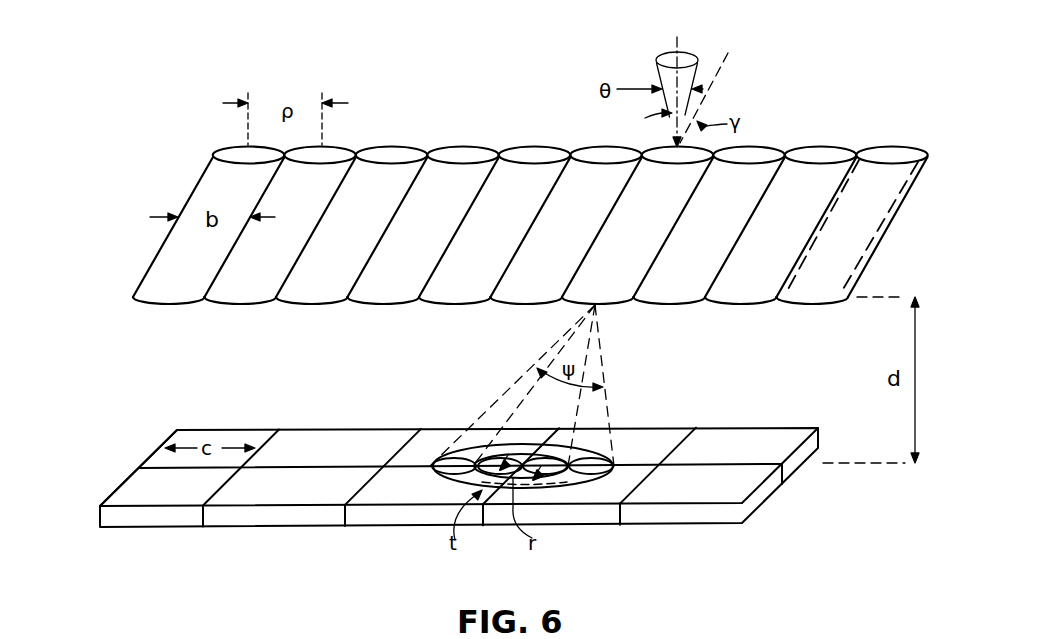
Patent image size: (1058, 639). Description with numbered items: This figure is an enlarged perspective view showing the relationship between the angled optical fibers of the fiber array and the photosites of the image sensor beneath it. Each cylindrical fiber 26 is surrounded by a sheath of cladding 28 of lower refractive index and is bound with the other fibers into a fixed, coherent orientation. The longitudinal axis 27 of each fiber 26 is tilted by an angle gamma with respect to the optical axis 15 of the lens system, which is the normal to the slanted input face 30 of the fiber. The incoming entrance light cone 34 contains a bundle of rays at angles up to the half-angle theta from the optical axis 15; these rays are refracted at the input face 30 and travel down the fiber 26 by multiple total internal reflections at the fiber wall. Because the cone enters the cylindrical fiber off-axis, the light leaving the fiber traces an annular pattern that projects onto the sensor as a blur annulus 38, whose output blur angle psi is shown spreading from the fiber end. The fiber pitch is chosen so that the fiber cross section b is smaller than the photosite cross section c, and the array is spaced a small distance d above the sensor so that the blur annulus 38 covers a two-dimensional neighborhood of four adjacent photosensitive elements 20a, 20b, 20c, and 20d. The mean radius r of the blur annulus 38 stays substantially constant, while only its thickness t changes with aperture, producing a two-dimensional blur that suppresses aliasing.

The optical axis 15 is at (673, 38).
The entrance light cone 34 is at (688, 50).
The longitudinal axis of fiber 27 is at (716, 79).
The input face 30 is at (647, 145).
The optical fiber 26 is at (552, 205).
The cladding 28 is at (872, 232).
The photosensitive element 20a is at (432, 432).
The photosensitive element 20b is at (668, 435).
The photosensitive element 20c is at (356, 519).
The photosensitive element 20d is at (611, 518).
The blur annulus 38 is at (436, 471).